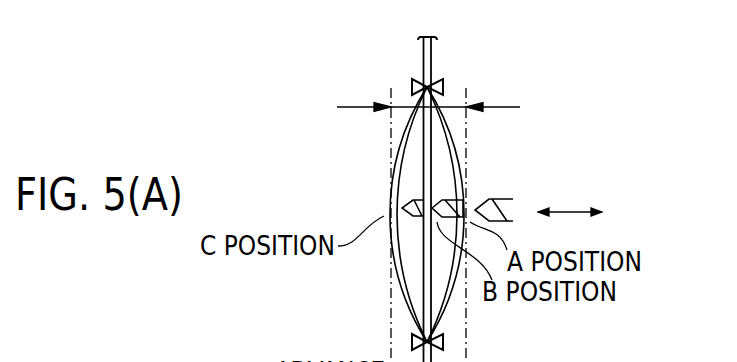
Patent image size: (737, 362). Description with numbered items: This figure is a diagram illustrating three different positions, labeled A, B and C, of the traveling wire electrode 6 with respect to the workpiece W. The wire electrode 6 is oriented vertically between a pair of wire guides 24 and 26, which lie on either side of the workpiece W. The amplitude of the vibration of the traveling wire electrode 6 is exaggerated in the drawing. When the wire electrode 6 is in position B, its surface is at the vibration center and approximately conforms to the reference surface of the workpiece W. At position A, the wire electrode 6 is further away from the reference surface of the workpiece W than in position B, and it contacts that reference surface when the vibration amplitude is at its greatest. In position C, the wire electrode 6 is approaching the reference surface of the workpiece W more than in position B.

The wire electrode 6 is at (428, 70).
The wire guide 24 is at (412, 89).
The wire guide 26 is at (412, 343).
The workpiece W is at (405, 205).